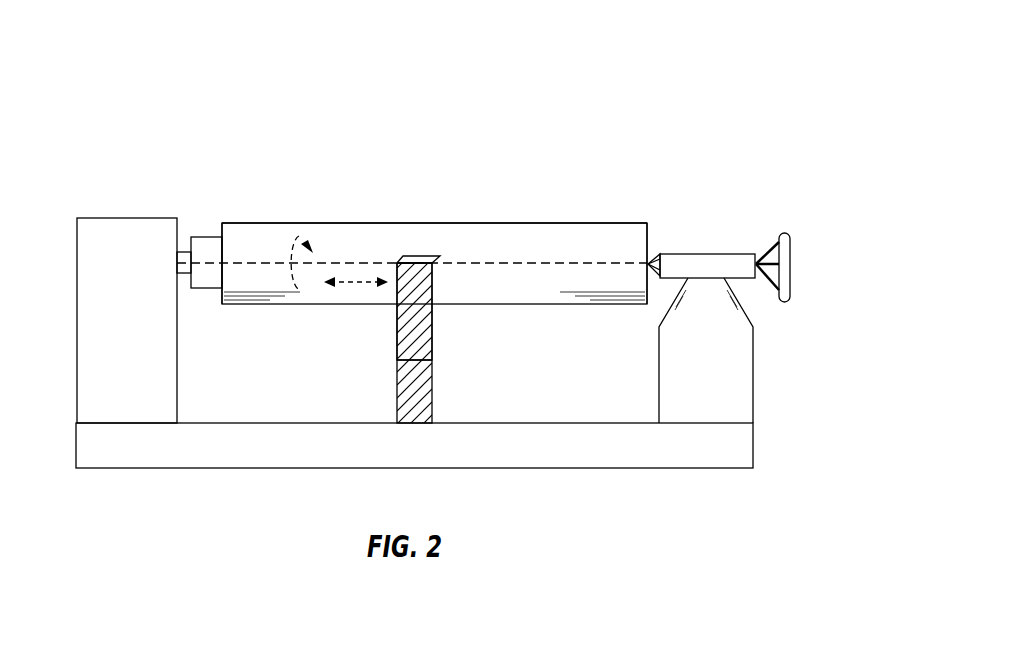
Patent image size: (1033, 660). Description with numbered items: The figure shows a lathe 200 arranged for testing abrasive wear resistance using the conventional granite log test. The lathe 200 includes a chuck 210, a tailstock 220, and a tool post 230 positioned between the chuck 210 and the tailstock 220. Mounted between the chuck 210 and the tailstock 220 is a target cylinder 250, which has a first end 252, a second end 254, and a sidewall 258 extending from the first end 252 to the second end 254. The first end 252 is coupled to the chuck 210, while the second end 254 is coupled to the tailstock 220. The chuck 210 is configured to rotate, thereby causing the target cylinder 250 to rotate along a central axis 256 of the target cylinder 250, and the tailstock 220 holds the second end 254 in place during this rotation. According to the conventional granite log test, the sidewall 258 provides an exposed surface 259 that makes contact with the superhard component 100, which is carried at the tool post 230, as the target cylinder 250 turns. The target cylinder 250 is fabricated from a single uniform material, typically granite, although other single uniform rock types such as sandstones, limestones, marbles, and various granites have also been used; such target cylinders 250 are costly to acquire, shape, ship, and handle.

The lathe 200 is at (653, 79).
The chuck 210 is at (205, 243).
The tailstock 220 is at (675, 265).
The tool post 230 is at (423, 345).
The superhard component 100 is at (437, 262).
The target cylinder 250 is at (370, 236).
The first end 252 is at (223, 250).
The second end 254 is at (645, 243).
The central axis 256 is at (548, 266).
The sidewall 258 is at (607, 288).
The exposed surface 259 is at (266, 301).